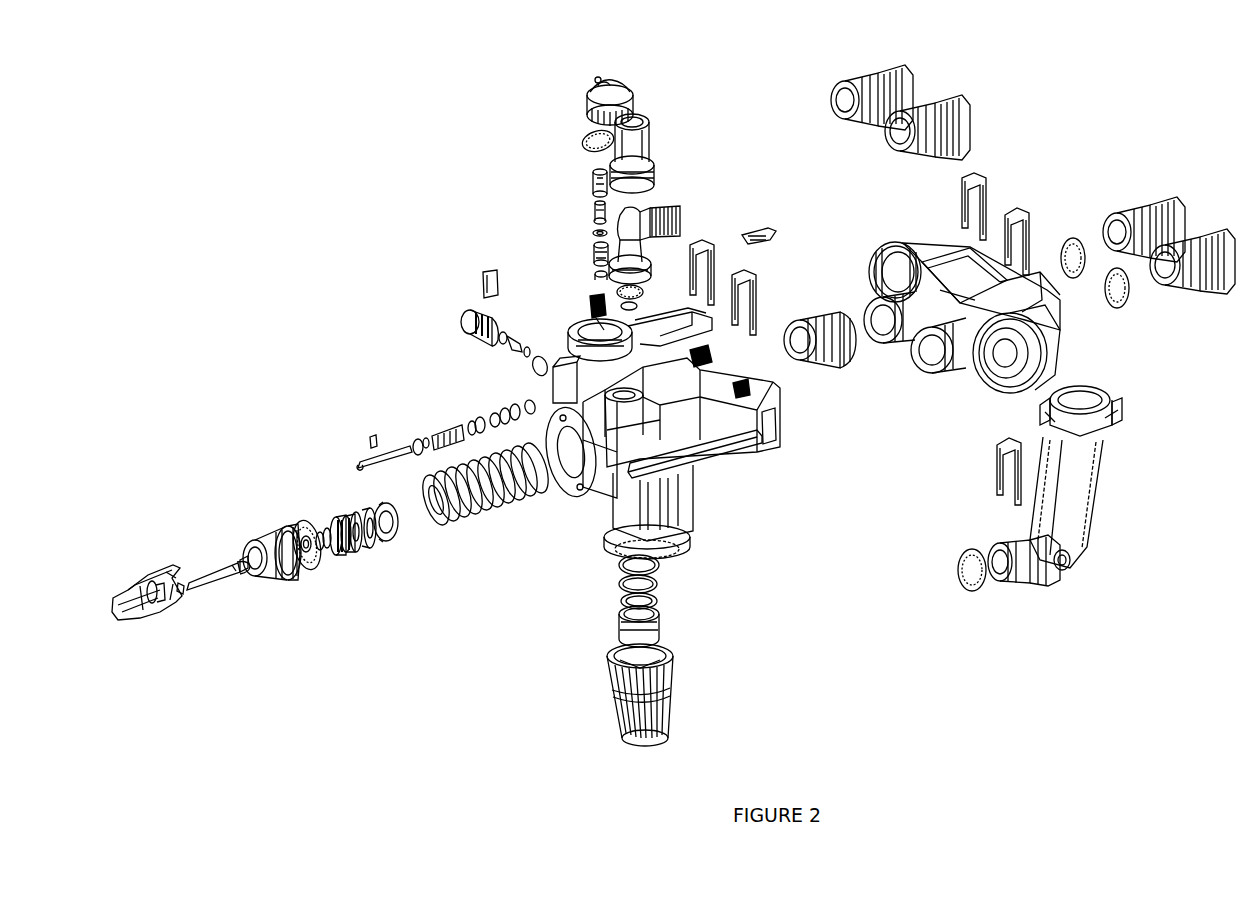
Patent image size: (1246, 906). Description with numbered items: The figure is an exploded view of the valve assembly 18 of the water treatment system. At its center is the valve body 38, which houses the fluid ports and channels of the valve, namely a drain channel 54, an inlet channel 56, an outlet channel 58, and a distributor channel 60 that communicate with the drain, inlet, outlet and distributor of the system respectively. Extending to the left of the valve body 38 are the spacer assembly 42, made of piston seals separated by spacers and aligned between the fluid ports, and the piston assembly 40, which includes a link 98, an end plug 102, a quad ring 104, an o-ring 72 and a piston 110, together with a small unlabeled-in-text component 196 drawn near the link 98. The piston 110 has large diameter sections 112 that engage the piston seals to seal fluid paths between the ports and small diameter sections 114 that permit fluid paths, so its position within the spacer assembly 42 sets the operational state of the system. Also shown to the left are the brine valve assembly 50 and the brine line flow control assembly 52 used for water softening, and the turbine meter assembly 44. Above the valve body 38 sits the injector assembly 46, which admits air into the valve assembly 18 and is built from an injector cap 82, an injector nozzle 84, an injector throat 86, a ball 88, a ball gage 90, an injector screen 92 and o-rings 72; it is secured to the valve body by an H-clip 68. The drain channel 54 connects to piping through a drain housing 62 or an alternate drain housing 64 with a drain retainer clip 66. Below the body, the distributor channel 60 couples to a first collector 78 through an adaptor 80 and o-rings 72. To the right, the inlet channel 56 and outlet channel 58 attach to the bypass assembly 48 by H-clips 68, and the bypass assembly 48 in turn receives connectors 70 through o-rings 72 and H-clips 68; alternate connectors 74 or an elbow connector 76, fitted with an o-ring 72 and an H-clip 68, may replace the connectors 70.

The valve assembly 18 is at (348, 135).
The valve body 38 is at (668, 490).
The piston assembly 40 is at (230, 530).
The spacer assembly 42 is at (487, 540).
The turbine meter assembly 44 is at (806, 318).
The injector assembly 46 is at (565, 107).
The bypass assembly 48 is at (936, 320).
The brine valve assembly 50 is at (408, 416).
The brine line flow control (BLFC) assembly 52 is at (445, 310).
The drain channel 54 is at (632, 400).
The inlet channel 56 is at (780, 415).
The outlet channel 58 is at (748, 378).
The distributor channel 60 is at (652, 555).
The drain housing 62 is at (635, 215).
The alternate drain housing 64 is at (625, 148).
The drain retainer clip 66 is at (757, 230).
The H-clip 68 is at (668, 310).
The connector 70 is at (1218, 240).
The o-ring 72 is at (590, 140).
The alternate connector 74 is at (950, 105).
The elbow connector 76 is at (1073, 505).
The first collector 78 is at (663, 697).
The adaptor 80 is at (645, 633).
The injector cap 82 is at (603, 95).
The injector nozzle 84 is at (595, 175).
The injector throat 86 is at (595, 205).
The ball 88 is at (595, 234).
The ball gage 90 is at (595, 252).
The injector screen 92 is at (588, 302).
The link 98 is at (130, 617).
The end plug 102 is at (268, 575).
The quad ring 104 is at (303, 535).
The piston 110 is at (337, 548).
The large diameter section 112 is at (386, 543).
The small diameter section 114 is at (372, 520).
The pin 196 is at (153, 600).